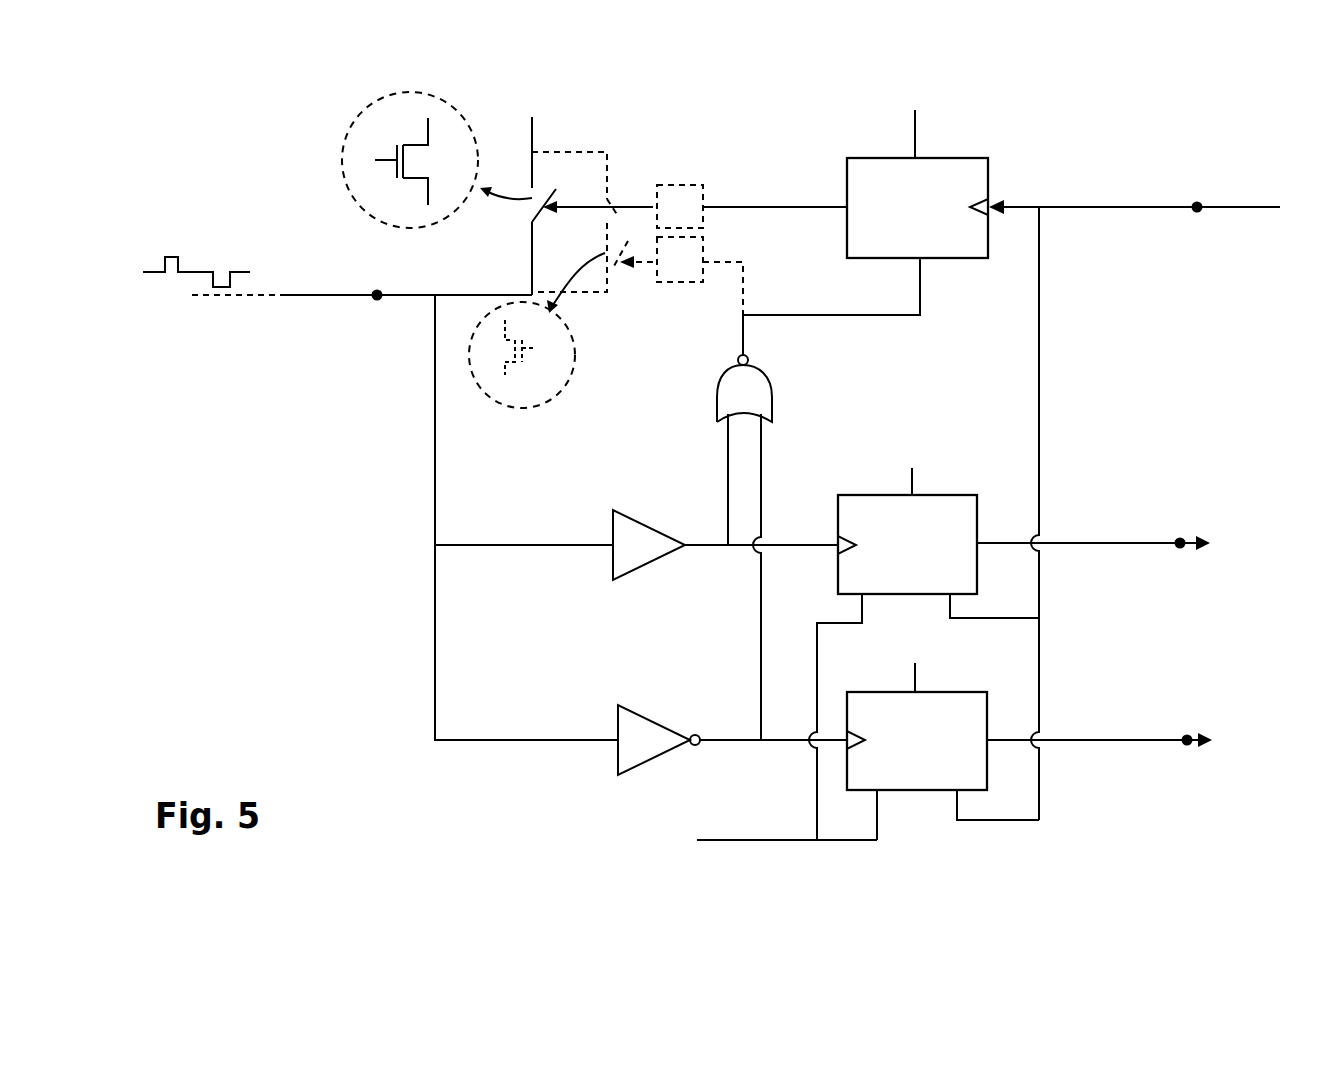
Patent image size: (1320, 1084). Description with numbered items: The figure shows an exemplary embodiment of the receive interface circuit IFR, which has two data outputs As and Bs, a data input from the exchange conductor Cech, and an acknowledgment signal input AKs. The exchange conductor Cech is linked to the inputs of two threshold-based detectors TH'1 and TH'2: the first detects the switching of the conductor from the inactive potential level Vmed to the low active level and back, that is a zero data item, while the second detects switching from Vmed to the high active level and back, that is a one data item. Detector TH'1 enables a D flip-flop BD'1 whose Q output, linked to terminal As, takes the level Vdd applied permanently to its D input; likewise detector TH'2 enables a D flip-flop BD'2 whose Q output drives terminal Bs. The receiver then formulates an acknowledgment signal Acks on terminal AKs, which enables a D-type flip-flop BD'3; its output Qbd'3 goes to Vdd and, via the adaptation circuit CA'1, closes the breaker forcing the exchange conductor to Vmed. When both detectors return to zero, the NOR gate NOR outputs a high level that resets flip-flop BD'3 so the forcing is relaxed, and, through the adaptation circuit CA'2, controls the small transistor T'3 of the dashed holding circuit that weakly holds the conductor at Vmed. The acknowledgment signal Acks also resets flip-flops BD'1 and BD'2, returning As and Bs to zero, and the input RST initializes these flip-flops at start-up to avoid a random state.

The receive interface circuit IFR is at (386, 517).
The exchange conductor Cech is at (337, 278).
The inactive potential level Vmed is at (497, 202).
The transistor T'3 is at (522, 355).
The adaptation circuit CA'1 is at (678, 191).
The adaptation circuit CA'2 is at (700, 276).
The output of flip-flop BD'3 Qbd'3 is at (775, 195).
The D-type flip-flop BD'3 is at (865, 236).
The supply logic level Vdd is at (916, 397).
The acknowledgment signal input AKs is at (1134, 197).
The acknowledgment signal Acks is at (1064, 501).
The NOR logic gate NOR is at (767, 527).
The threshold-based detector TH'2 is at (725, 551).
The threshold-based detector TH'1 is at (732, 746).
The D flip-flop BD'2 is at (924, 667).
The D flip-flop BD'1 is at (943, 766).
The data output terminal Bs is at (1093, 531).
The data output terminal As is at (1099, 729).
The reset input RST is at (777, 826).